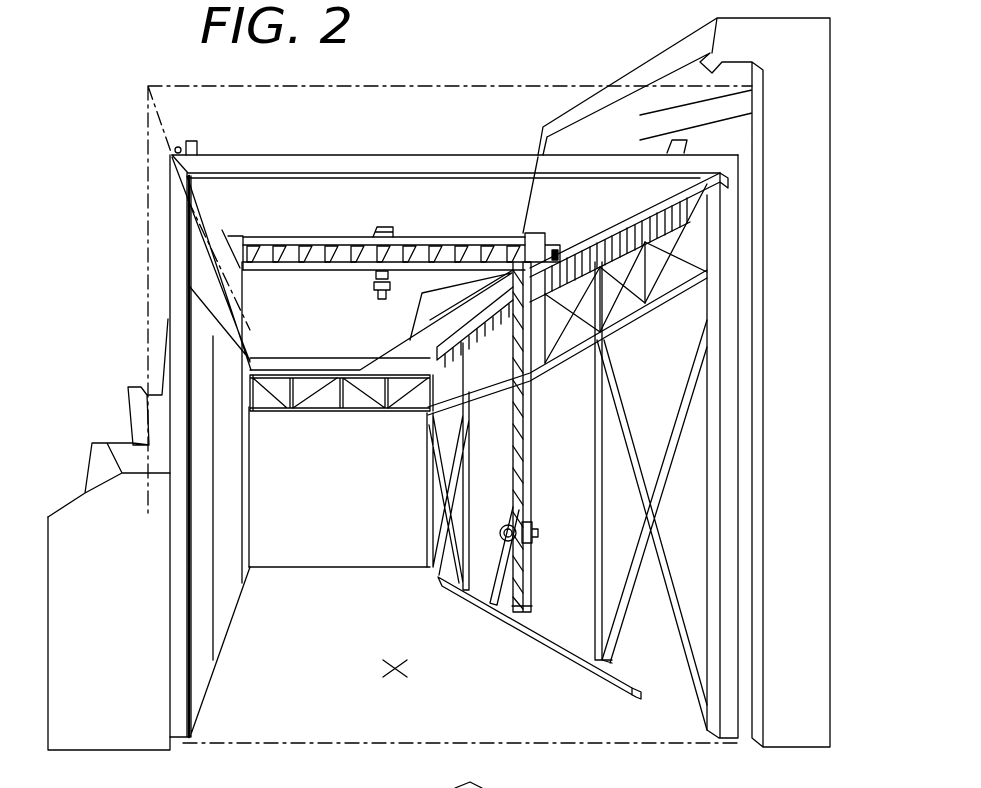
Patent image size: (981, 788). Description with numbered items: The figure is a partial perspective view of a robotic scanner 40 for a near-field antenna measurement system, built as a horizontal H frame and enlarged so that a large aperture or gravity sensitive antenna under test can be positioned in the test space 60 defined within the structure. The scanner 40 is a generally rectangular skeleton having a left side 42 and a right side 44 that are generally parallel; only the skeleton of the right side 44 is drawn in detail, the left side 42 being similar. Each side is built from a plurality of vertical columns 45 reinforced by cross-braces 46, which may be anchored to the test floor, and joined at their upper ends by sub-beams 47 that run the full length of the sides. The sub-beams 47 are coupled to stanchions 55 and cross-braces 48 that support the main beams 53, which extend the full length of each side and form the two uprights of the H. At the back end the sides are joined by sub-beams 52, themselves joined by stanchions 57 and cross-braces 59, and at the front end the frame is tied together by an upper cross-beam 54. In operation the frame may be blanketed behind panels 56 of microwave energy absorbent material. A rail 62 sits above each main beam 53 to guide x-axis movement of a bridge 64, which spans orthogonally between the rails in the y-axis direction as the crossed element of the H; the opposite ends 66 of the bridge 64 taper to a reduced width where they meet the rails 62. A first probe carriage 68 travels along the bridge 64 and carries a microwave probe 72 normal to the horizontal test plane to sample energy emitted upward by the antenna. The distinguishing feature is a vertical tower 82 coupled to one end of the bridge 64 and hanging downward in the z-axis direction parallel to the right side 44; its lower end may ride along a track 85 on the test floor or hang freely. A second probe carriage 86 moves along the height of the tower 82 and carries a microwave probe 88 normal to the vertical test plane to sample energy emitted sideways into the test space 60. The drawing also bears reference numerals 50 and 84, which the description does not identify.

The robotic scanner 40 is at (108, 110).
The left side 42 is at (198, 668).
The right side 44 is at (565, 608).
The vertical columns 45 is at (602, 423).
The cross-braces 46 is at (663, 428).
The sub-beams 47 is at (648, 306).
The cross-braces 48 is at (648, 253).
The floor 50 is at (603, 745).
The sub-beams 52 is at (267, 372).
The main beams 53 is at (697, 200).
The cross-beam 54 is at (362, 160).
The stanchions 55 is at (655, 246).
The panels 56 is at (808, 146).
The stanchions 57 is at (303, 373).
The cross-braces 59 is at (277, 390).
The test space 60 is at (330, 620).
The rail 62 is at (213, 193).
The bridge 64 is at (303, 235).
The opposite ends 66 is at (227, 235).
The first probe carriage 68 is at (387, 228).
The microwave probe 72 is at (380, 296).
The vertical tower 82 is at (523, 470).
The mast head block 84 is at (530, 231).
The track 85 is at (613, 687).
The second probe carriage 86 is at (535, 525).
The microwave probe 88 is at (503, 533).